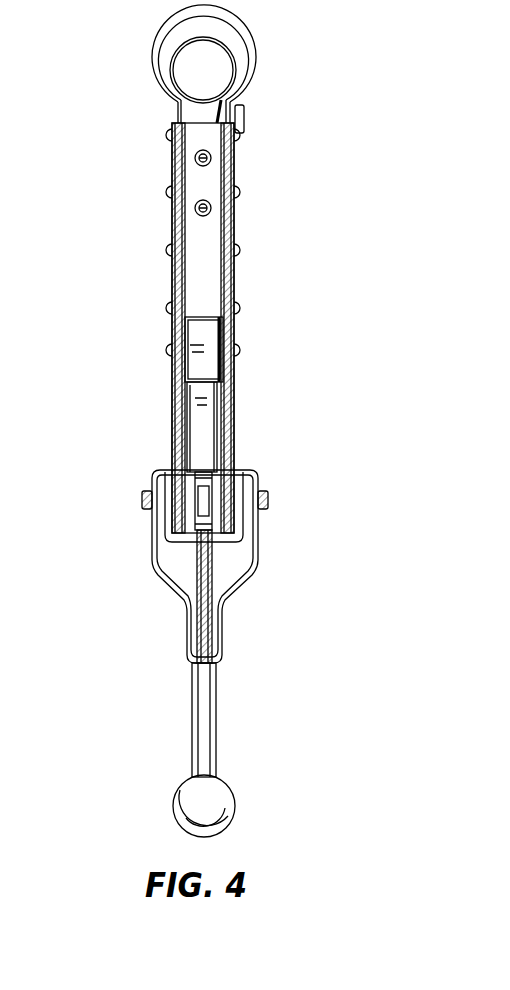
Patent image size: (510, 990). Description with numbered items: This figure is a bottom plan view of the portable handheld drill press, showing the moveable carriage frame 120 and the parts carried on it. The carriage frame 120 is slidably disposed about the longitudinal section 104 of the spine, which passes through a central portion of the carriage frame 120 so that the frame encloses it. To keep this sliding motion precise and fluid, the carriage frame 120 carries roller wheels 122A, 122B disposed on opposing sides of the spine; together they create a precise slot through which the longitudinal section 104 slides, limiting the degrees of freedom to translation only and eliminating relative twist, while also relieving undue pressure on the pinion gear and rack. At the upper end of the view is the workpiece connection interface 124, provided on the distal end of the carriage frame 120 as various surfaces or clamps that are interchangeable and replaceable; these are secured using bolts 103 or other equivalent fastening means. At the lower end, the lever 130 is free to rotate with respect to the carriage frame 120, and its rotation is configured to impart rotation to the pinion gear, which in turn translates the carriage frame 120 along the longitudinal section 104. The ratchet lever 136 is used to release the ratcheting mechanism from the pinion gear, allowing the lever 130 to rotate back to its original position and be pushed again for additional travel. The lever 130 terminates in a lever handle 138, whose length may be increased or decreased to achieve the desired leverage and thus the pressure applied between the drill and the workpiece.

The bolts 103 is at (211, 158).
The longitudinal section 104 is at (205, 412).
The carriage frame 120 is at (205, 274).
The roller wheel 122A is at (205, 336).
The roller wheel 122B is at (200, 500).
The workpiece connection interface 124 is at (237, 58).
The lever 130 is at (148, 568).
The ratchet lever 136 is at (203, 630).
The lever handle 138 is at (200, 746).